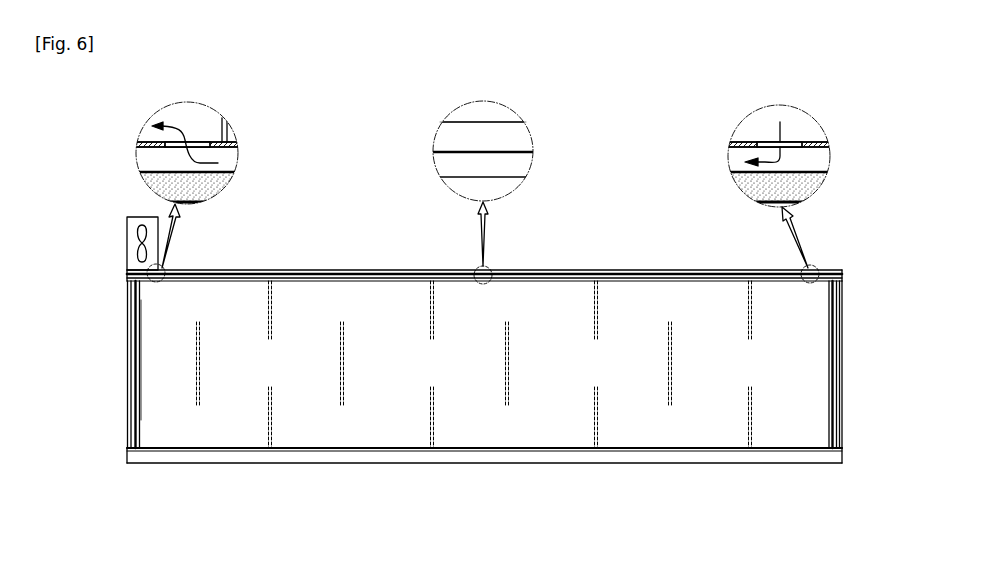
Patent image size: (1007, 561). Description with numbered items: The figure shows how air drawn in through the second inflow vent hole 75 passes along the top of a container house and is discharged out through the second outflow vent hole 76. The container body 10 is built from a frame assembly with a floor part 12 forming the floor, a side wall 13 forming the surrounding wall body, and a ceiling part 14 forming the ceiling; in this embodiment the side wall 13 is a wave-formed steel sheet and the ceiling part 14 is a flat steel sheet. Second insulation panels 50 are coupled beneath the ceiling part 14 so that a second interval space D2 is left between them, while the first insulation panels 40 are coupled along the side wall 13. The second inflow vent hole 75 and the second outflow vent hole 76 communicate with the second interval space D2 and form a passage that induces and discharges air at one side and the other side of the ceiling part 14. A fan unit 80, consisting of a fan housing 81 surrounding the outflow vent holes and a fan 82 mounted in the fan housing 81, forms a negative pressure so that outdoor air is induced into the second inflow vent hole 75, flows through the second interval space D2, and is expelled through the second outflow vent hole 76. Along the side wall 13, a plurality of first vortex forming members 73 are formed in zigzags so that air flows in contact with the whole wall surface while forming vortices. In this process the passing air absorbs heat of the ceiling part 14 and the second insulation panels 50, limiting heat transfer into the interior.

The container body 10 is at (474, 317).
The floor part 12 is at (255, 455).
The side wall 13 is at (127, 403).
The ceiling part 14 is at (150, 142).
The first insulation panel 40 is at (150, 340).
The second insulation panel 50 is at (520, 167).
The first vortex forming member 73 is at (430, 322).
The second inflow vent hole 75 is at (795, 142).
The second outflow vent hole 76 is at (200, 142).
The fan unit 80 is at (95, 228).
The fan housing 81 is at (125, 222).
The fan 82 is at (137, 247).
The second interval space D2 is at (525, 134).